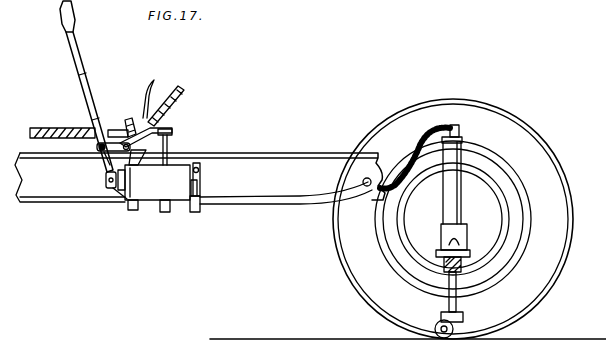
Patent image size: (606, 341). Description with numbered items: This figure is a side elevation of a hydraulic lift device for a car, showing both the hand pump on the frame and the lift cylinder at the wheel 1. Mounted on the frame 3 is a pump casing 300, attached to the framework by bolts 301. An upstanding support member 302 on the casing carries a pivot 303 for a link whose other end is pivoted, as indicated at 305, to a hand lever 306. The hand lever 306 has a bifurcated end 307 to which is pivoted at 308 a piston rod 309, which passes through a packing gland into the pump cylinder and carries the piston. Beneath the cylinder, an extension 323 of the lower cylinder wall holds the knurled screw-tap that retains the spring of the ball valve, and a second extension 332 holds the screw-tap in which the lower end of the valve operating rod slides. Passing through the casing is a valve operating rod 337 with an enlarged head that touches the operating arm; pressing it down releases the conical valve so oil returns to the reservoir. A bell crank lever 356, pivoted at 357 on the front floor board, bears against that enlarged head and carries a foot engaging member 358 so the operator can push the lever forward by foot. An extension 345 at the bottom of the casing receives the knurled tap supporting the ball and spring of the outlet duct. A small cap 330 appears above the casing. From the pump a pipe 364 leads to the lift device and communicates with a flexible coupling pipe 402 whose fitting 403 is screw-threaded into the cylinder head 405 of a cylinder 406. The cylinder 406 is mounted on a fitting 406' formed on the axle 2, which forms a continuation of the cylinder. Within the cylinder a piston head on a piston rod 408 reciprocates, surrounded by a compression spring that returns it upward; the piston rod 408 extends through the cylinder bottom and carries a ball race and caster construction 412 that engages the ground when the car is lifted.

The wheel 1 is at (539, 129).
The axle 2 is at (461, 266).
The frame 3 is at (290, 153).
The pump casing 300 is at (151, 190).
The bolts 301 is at (201, 176).
The upstanding support member 302 is at (136, 162).
The pivot 303 is at (150, 131).
The pivot of link to hand lever 305 is at (97, 147).
The hand lever 306 is at (88, 76).
The bifurcated end 307 is at (106, 182).
The pivot of piston rod 308 is at (112, 190).
The piston rod 309 is at (108, 160).
The extension of lower cylinder wall 323 is at (132, 205).
The cap 330 is at (172, 133).
The extension of lower cylinder wall 332 is at (167, 211).
The valve operating rod 337 is at (167, 152).
The extension at bottom of casing 345 is at (195, 210).
The bell crank lever 356 is at (165, 118).
The pivot of bell crank lever 357 is at (130, 122).
The foot engaging member 358 is at (147, 90).
The pipe 364 is at (265, 196).
The flexible coupling pipe 402 is at (418, 140).
The fitting 403 is at (457, 127).
The cylinder head 405 is at (463, 140).
The cylinder 406 is at (468, 183).
The fitting 406' is at (467, 237).
The piston rod 408 is at (449, 298).
The ball race and caster construction 412 is at (441, 318).